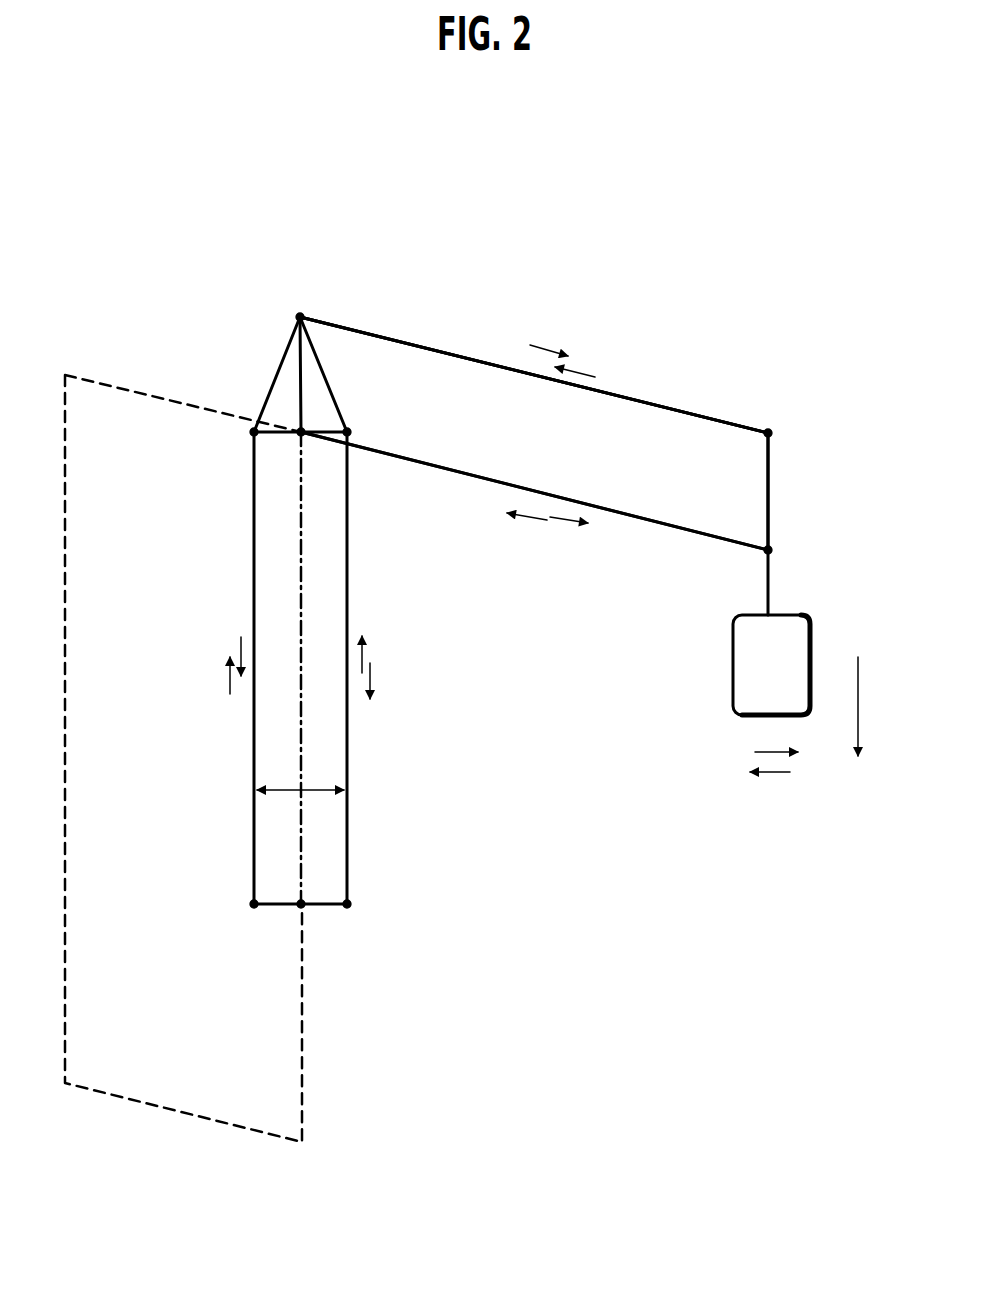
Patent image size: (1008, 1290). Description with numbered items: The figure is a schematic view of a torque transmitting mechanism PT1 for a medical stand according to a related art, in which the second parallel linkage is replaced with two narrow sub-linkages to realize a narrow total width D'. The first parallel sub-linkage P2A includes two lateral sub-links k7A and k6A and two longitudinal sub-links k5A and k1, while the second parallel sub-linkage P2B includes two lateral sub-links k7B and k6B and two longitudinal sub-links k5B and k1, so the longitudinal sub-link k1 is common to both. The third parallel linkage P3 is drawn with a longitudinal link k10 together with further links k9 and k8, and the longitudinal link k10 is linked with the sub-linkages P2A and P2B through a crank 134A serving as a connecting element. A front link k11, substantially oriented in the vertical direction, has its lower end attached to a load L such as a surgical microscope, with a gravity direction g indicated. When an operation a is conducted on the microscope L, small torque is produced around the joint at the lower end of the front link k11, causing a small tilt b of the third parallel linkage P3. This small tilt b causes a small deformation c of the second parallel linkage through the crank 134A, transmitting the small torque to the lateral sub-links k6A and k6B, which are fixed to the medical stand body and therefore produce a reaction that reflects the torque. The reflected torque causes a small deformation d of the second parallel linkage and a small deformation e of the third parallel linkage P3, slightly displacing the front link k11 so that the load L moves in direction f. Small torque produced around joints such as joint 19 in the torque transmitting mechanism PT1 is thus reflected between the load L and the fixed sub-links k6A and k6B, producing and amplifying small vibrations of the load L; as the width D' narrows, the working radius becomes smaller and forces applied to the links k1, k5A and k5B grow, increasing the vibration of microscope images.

The crank 134A is at (311, 347).
The lateral sub-link k7A is at (277, 428).
The lateral sub-link k7B is at (330, 428).
The longitudinal link k10 is at (300, 386).
The upper frame member segment k9 is at (702, 415).
The lower frame member k8 is at (653, 523).
The front link k11 is at (770, 488).
The third parallel linkage P3 is at (750, 423).
The torque transmitting mechanism PT1 is at (648, 320).
The longitudinal sub-link k5A is at (253, 738).
The longitudinal sub-link k5B is at (348, 725).
The longitudinal sub-link k1 is at (303, 586).
The first parallel sub-linkage P2A is at (250, 825).
The second parallel sub-linkage P2B is at (351, 828).
The lateral sub-link k6A is at (278, 907).
The lateral sub-link k6B is at (332, 907).
The joint 19 is at (302, 907).
The total width D' is at (300, 772).
The load L is at (733, 670).
The gravity direction g is at (872, 706).
The operation a is at (787, 749).
The direction of load movement f is at (761, 771).
The small deformation of third parallel linkage e is at (527, 419).
The small tilt b is at (584, 449).
The small deformation of second parallel linkage c is at (302, 636).
The small deformation of second parallel linkage d is at (300, 678).